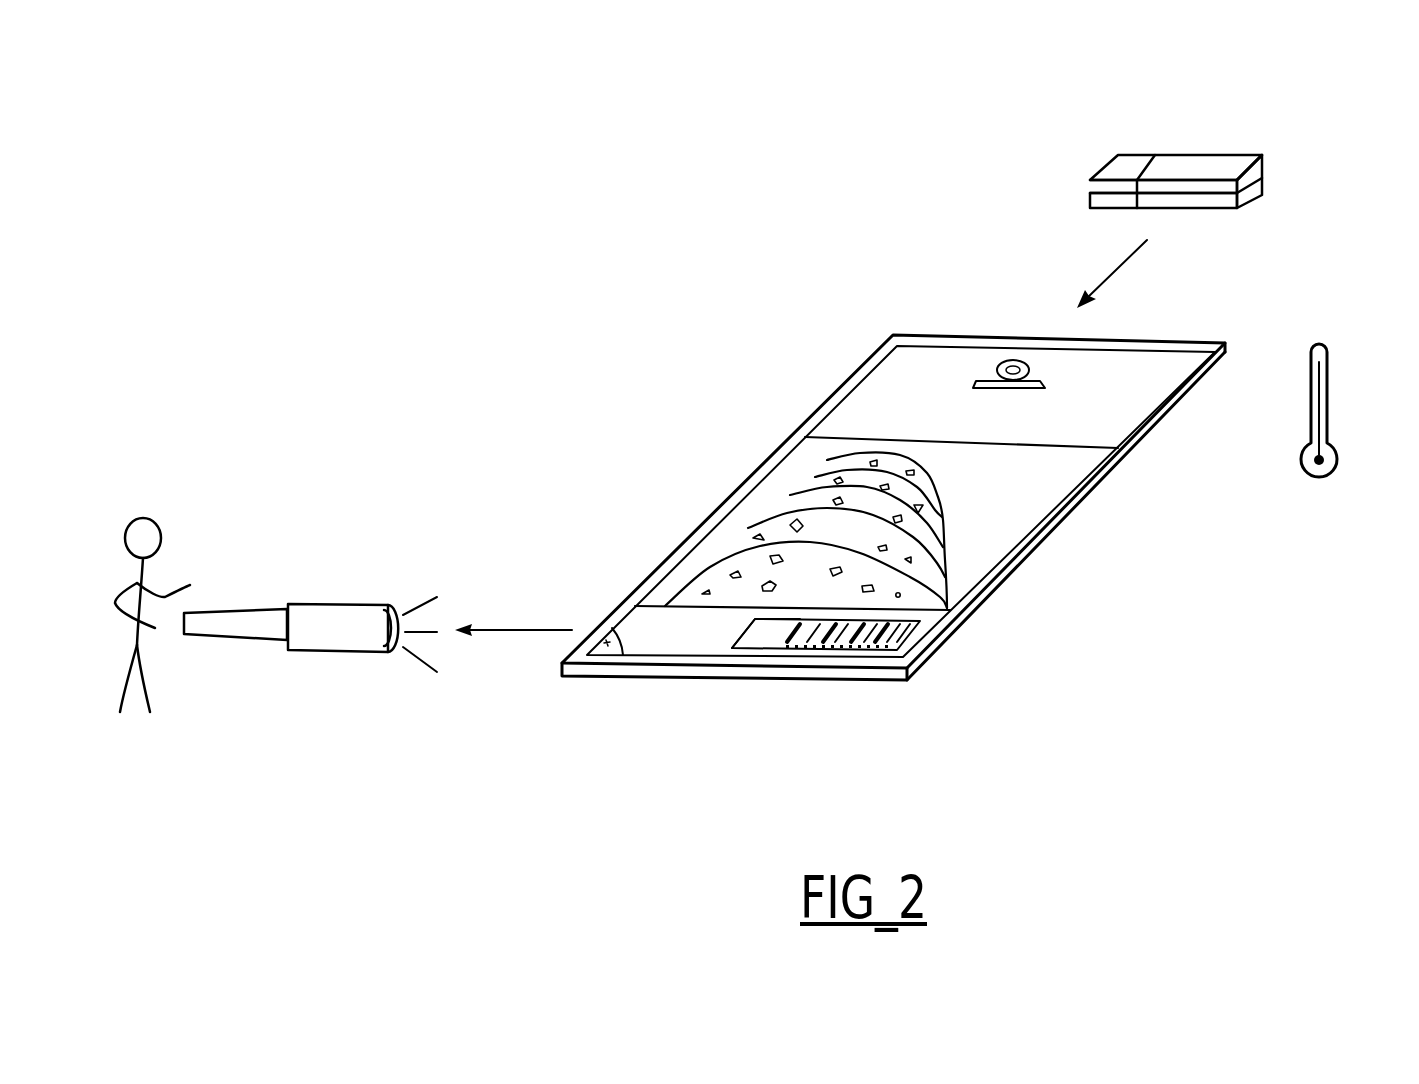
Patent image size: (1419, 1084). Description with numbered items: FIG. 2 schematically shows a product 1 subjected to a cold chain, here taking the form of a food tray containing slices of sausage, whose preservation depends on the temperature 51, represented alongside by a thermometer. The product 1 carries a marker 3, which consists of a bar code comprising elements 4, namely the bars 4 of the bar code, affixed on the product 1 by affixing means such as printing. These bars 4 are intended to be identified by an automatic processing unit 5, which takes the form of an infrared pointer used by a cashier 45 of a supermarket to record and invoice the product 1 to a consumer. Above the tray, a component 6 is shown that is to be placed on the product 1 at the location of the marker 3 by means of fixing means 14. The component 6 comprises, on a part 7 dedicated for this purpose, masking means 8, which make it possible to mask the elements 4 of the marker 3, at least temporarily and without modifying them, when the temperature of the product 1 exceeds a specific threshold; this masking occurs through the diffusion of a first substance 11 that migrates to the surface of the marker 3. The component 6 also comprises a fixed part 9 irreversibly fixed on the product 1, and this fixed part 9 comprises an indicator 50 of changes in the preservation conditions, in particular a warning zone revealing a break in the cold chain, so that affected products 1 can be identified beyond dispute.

The product 1 is at (820, 408).
The marker 3 is at (798, 638).
The bars of the bar code 4 is at (865, 638).
The automatic processing unit 5 is at (346, 603).
The component 6 is at (1282, 132).
The part 7 is at (1265, 152).
The masking means 8 is at (1262, 166).
The fixed part 9 is at (1118, 150).
The first substance 11 is at (1096, 187).
The fixing means 14 is at (1096, 200).
The cashier 45 is at (150, 517).
The indicator 50 is at (757, 640).
The temperature 51 is at (1330, 392).